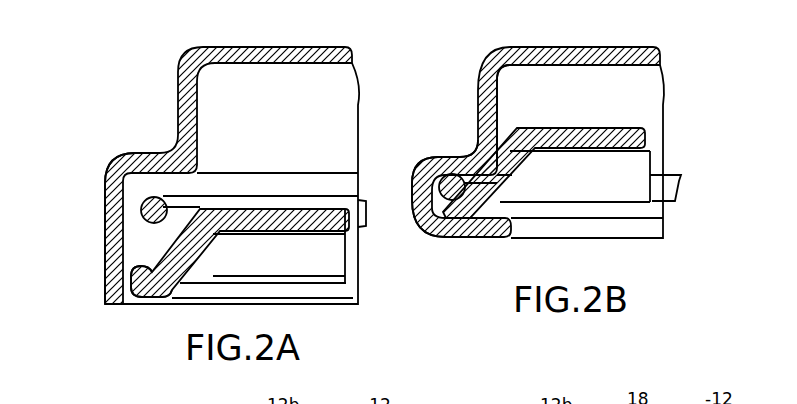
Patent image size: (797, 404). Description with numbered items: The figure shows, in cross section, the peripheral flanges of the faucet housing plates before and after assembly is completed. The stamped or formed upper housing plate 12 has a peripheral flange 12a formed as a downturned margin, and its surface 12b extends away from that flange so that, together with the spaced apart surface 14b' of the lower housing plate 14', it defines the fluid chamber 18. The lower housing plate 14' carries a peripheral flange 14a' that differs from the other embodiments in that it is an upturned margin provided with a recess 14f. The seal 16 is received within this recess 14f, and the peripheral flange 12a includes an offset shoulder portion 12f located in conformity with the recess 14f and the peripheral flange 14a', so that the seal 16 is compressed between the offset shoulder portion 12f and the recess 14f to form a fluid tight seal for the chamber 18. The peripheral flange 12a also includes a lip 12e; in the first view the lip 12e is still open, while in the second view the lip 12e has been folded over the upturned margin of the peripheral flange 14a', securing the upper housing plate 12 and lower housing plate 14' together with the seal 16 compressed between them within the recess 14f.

In FIG. 2A, the upper housing plate 12 is at (334, 46).
In FIG. 2B, the upper housing plate 12 is at (566, 46).
In FIG. 2A, the peripheral flange 12a is at (105, 185).
In FIG. 2B, the peripheral flange 12a is at (412, 190).
In FIG. 2A, the surface 12b is at (236, 46).
In FIG. 2B, the surface 12b is at (638, 48).
In FIG. 2A, the lip 12e is at (104, 294).
In FIG. 2B, the lip 12e is at (456, 238).
In FIG. 2A, the offset shoulder portion 12f is at (146, 153).
In FIG. 2B, the offset shoulder portion 12f is at (461, 157).
In FIG. 2A, the lower housing plate 14' is at (240, 197).
In FIG. 2B, the lower housing plate 14' is at (544, 153).
In FIG. 2A, the peripheral flange 14a' is at (262, 253).
In FIG. 2B, the peripheral flange 14a' is at (581, 184).
In FIG. 2A, the surface 14b' is at (283, 163).
In FIG. 2B, the surface 14b' is at (605, 153).
In FIG. 2A, the recess 14f is at (152, 283).
In FIG. 2A, the seal 16 is at (168, 200).
In FIG. 2B, the seal 16 is at (450, 173).
In FIG. 2B, the chamber 18 is at (515, 80).